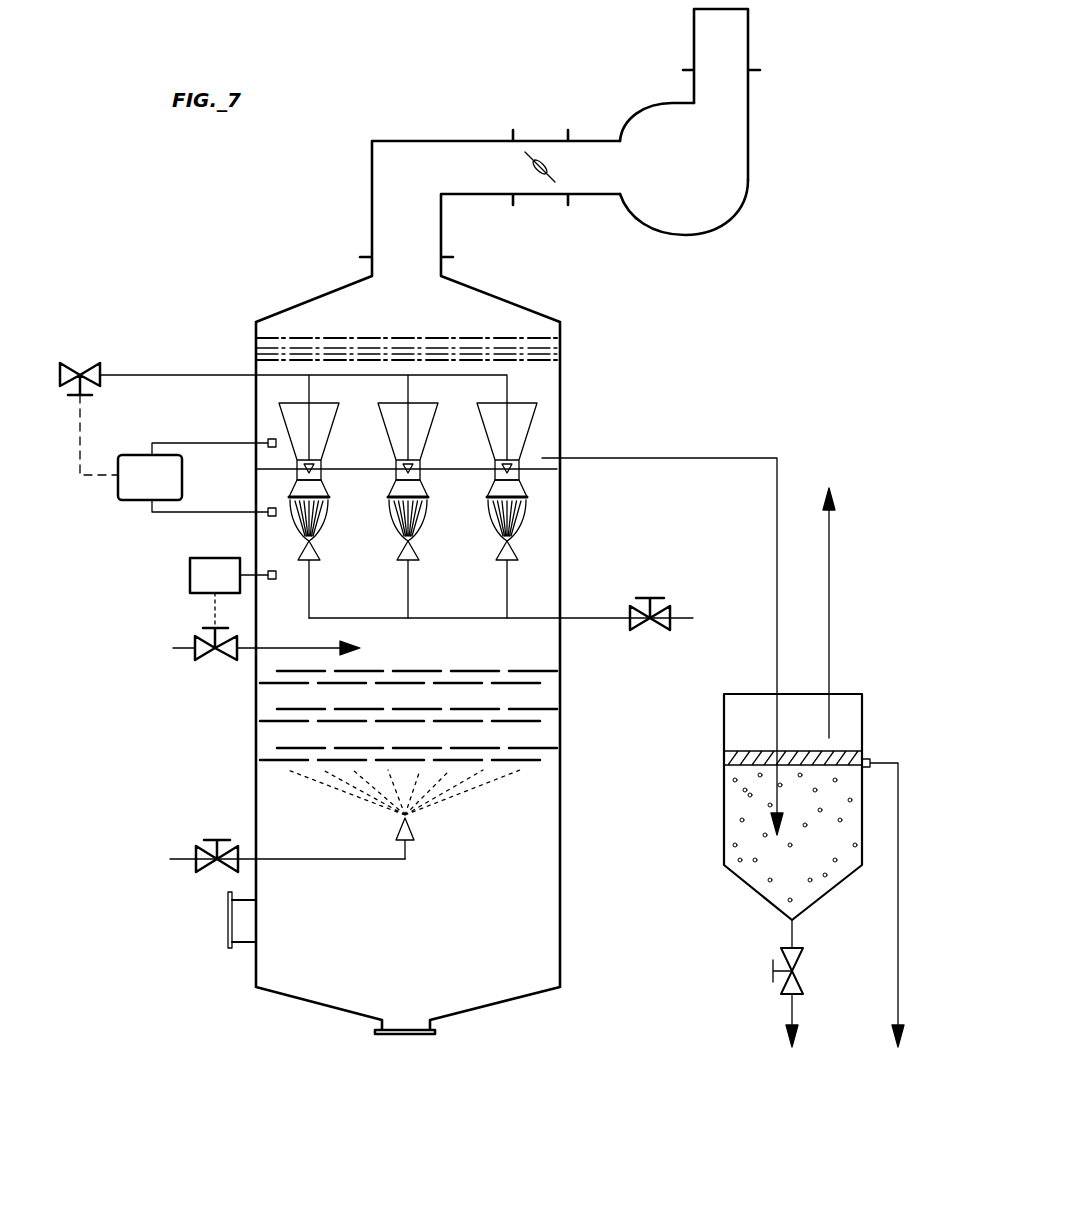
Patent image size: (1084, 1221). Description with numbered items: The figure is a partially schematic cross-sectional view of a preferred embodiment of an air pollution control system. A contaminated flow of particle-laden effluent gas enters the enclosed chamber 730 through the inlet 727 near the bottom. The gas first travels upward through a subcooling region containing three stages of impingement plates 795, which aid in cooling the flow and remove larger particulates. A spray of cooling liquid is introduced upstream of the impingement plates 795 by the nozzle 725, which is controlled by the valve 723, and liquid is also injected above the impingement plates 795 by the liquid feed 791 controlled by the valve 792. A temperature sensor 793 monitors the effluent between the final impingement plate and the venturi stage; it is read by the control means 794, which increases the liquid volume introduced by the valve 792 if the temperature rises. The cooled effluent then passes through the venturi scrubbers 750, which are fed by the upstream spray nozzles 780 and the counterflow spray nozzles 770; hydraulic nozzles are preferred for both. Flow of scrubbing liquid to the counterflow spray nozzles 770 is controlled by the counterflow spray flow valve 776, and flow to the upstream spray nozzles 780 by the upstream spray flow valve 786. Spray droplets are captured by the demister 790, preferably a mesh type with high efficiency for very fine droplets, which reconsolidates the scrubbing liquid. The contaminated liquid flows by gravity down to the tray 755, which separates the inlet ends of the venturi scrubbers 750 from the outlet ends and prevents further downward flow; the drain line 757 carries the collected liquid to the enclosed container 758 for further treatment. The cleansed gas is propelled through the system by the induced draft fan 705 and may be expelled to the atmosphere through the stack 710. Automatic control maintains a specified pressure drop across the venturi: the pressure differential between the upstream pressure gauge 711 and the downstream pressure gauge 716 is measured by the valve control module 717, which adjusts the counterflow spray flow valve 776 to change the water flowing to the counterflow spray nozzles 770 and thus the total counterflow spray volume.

The induced draft fan 705 is at (657, 115).
The stack 710 is at (748, 20).
The upstream pressure gauge 711 is at (270, 516).
The downstream pressure gauge 716 is at (268, 438).
The valve control module 717 is at (168, 490).
The valve 723 is at (215, 838).
The nozzle 725 is at (416, 826).
The inlet 727 is at (228, 900).
The enclosed chamber 730 is at (415, 956).
The venturi scrubbers 750 is at (395, 468).
The tray 755 is at (266, 472).
The drain line 757 is at (625, 457).
The enclosed container 758 is at (838, 859).
The counterflow spray nozzles 770 is at (390, 480).
The counterflow spray flow valve 776 is at (80, 362).
The upstream spray nozzles 780 is at (505, 565).
The upstream spray flow valve 786 is at (658, 632).
The demister 790 is at (378, 338).
The liquid feed 791 is at (358, 643).
The valve 792 is at (224, 660).
The temperature sensor 793 is at (268, 570).
The control means 794 is at (190, 585).
The impingement plates 795 is at (532, 760).